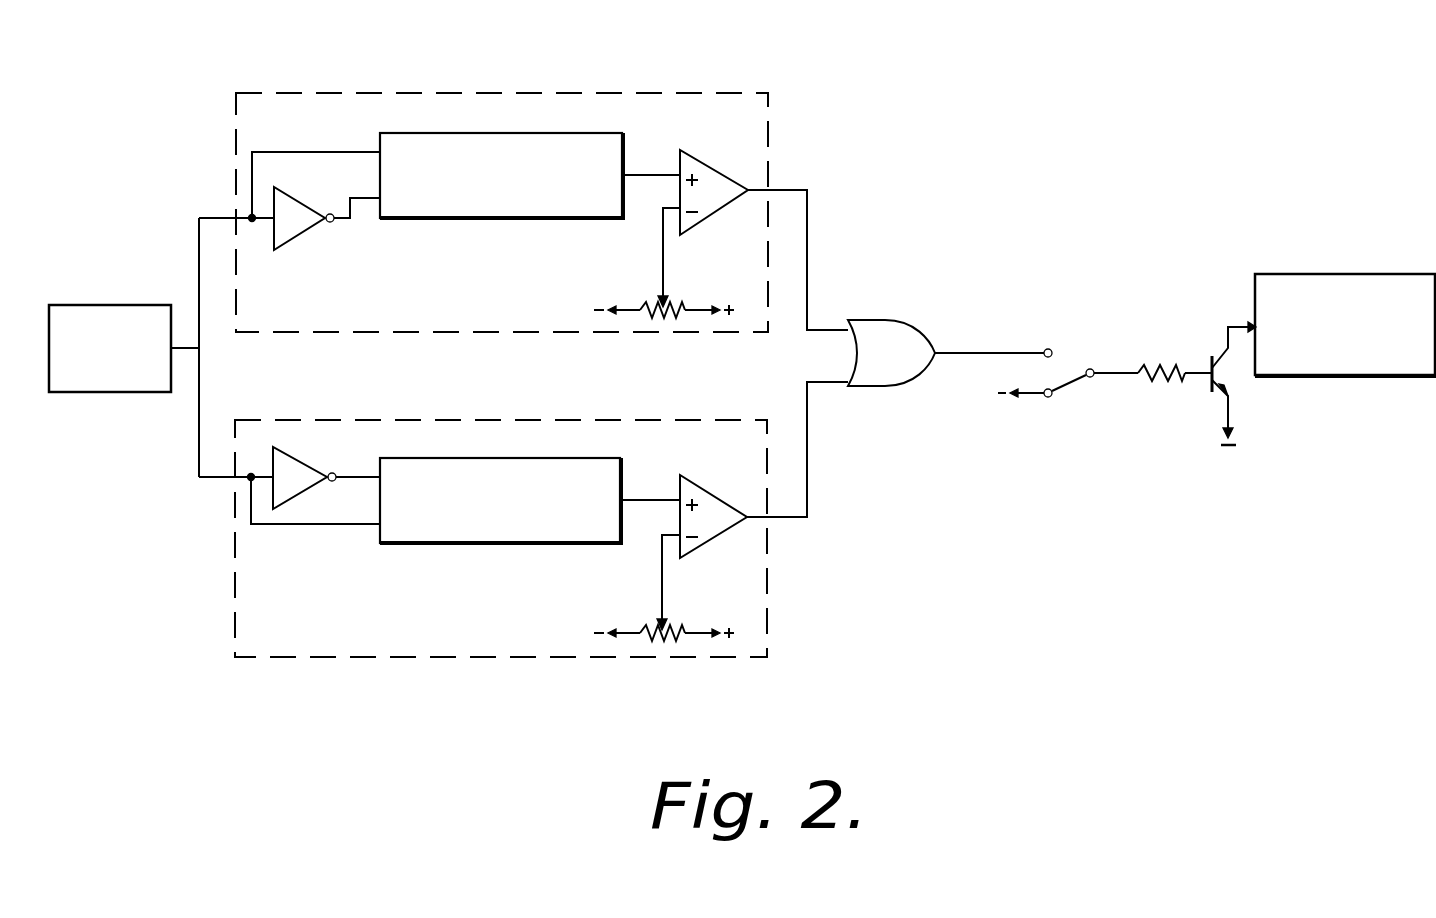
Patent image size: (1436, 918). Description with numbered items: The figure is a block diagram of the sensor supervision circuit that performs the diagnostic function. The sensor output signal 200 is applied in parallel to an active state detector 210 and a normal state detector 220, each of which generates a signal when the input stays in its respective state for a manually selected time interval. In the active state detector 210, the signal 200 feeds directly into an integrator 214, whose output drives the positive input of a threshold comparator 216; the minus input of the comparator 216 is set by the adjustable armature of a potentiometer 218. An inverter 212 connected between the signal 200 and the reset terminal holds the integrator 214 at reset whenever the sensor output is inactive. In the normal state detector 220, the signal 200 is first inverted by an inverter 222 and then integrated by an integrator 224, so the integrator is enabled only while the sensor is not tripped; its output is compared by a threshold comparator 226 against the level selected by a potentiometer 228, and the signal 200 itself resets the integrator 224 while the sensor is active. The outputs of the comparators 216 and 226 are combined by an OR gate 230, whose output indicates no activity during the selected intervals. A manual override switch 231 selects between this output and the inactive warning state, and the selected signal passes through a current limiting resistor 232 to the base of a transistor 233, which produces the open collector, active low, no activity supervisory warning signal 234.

The sensor output signal 200 is at (109, 305).
The active state detector 210 is at (502, 92).
The inverter 212 is at (297, 253).
The integrator 214 is at (499, 222).
The threshold comparator 216 is at (716, 152).
The potentiometer 218 is at (663, 316).
The normal state detector 220 is at (500, 659).
The inverter 222 is at (297, 511).
The integrator 224 is at (499, 546).
The threshold comparator 226 is at (713, 490).
The potentiometer 228 is at (662, 641).
The OR gate 230 is at (868, 318).
The manual override switch 231 is at (1090, 368).
The current limiting resistor 232 is at (1160, 365).
The transistor 233 is at (1210, 385).
The no activity supervisory warning signal 234 is at (1350, 272).